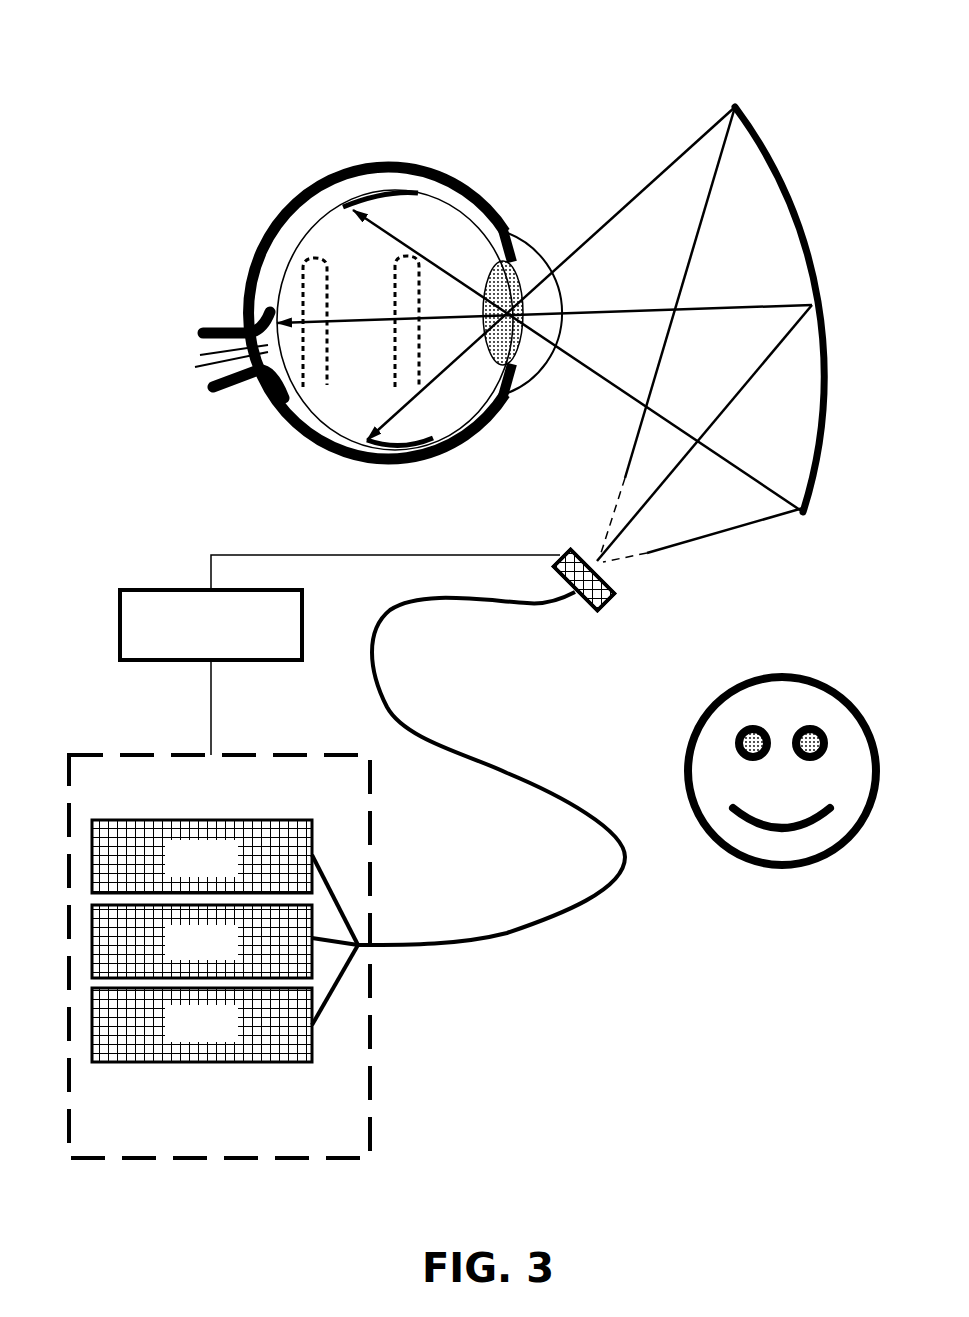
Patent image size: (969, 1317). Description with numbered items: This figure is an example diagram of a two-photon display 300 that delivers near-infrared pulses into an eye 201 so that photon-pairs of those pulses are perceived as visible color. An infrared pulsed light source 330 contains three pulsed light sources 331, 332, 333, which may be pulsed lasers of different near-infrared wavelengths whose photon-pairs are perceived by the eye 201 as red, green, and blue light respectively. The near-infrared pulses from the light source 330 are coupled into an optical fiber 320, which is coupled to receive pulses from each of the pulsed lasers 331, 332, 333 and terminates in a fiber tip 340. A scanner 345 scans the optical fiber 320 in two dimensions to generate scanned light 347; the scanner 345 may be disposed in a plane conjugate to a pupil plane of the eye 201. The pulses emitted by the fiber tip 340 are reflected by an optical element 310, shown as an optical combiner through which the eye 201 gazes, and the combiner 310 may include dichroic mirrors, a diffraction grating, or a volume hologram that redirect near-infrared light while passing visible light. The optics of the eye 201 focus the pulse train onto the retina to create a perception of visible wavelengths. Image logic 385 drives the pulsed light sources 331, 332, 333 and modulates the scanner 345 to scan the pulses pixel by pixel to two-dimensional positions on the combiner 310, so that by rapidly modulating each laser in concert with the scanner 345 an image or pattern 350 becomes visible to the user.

The two-photon display 300 is at (838, 37).
The eye 201 is at (297, 166).
The optical element 310 is at (786, 172).
The optical fiber 320 is at (477, 760).
The infrared pulsed light source 330 is at (214, 1121).
The pulsed light source 331 is at (219, 870).
The pulsed light source 332 is at (219, 955).
The pulsed light source 333 is at (219, 1038).
The fiber tip 340 is at (591, 553).
The scanner 345 is at (604, 604).
The scanned light 347 is at (625, 427).
The pattern 350 is at (760, 675).
The image logic 385 is at (340, 655).